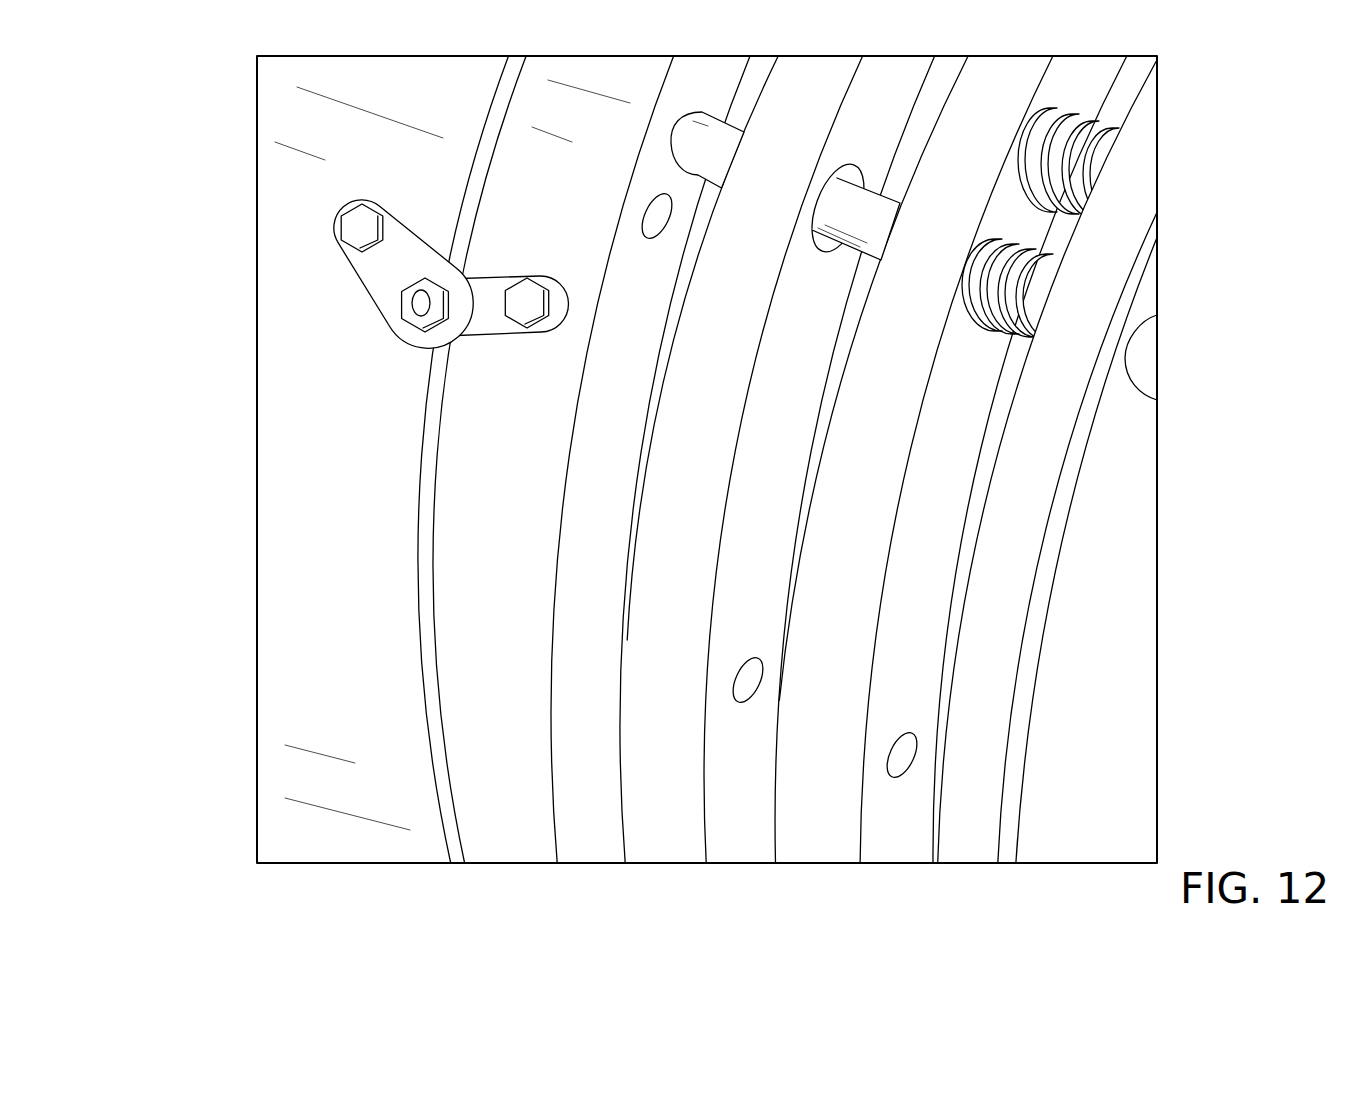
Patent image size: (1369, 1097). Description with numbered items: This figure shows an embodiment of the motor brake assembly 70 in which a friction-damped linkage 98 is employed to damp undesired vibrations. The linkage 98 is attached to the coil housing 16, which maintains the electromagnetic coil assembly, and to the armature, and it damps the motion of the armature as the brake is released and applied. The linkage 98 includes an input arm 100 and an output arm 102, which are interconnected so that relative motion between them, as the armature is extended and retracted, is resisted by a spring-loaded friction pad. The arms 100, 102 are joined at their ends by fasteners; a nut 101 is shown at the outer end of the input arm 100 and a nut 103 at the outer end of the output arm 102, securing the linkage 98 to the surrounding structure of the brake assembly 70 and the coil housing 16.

The coil housing 16 is at (299, 168).
The motor brake assembly 70 is at (1182, 260).
The friction-damped linkage 98 is at (389, 337).
The input arm 100 is at (393, 263).
The nut 101 is at (360, 221).
The output arm 102 is at (486, 327).
The nut 103 is at (525, 299).